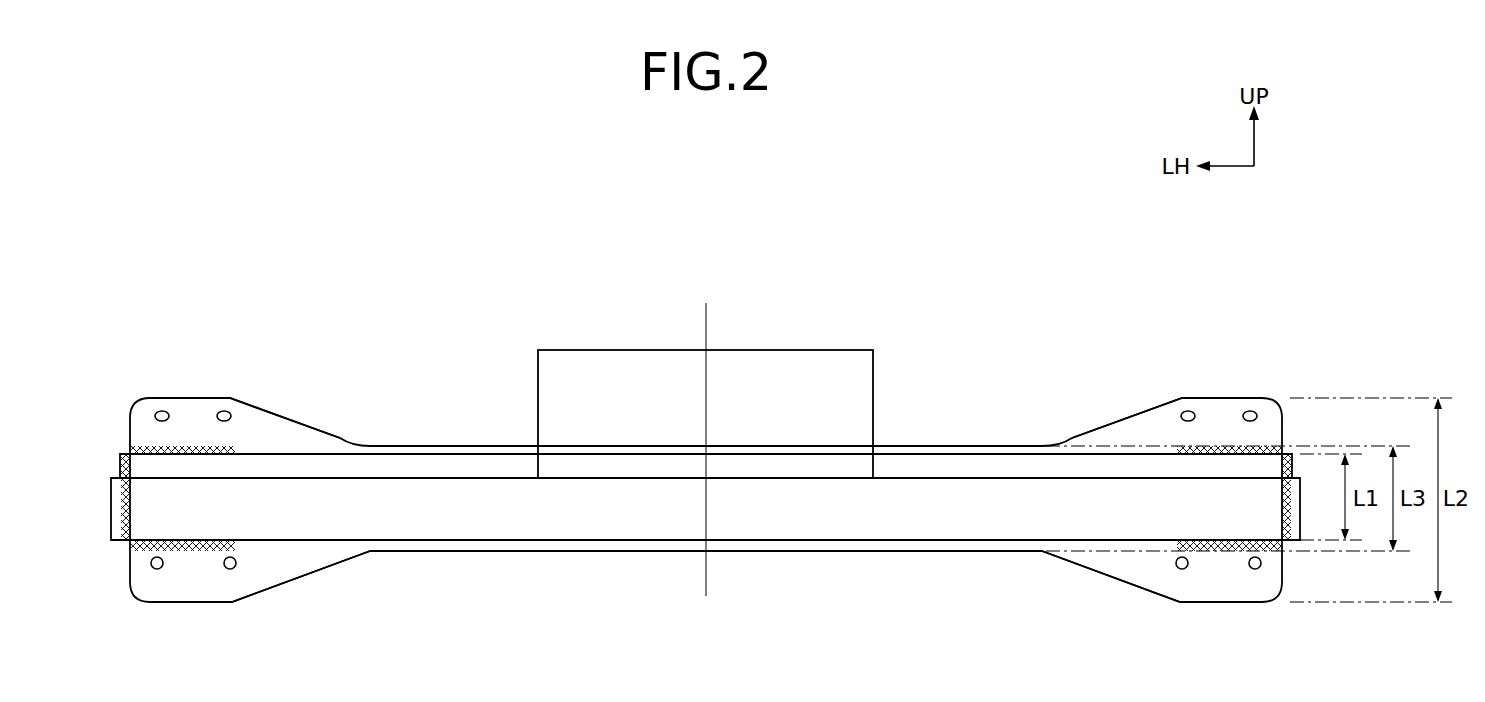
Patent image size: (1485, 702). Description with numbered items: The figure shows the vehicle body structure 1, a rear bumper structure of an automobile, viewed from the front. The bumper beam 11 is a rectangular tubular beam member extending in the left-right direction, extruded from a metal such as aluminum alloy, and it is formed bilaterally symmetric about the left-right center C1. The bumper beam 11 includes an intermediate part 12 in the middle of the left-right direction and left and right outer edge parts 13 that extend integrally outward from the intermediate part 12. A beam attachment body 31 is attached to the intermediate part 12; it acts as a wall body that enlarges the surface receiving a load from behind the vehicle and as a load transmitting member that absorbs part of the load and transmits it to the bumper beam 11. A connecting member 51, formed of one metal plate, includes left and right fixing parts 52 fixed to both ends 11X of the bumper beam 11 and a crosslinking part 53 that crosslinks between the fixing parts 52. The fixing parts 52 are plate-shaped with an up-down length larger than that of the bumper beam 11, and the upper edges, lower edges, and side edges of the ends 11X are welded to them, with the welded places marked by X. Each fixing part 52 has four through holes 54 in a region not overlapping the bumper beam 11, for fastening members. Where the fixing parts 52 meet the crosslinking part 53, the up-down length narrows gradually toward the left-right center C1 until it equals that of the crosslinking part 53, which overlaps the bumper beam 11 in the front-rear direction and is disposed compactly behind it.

The vehicle body structure 1 is at (938, 212).
The bumper beam 11 is at (897, 458).
The intermediate part 12 is at (790, 476).
The both ends 11X is at (143, 467).
The outer edge parts 13 is at (348, 468).
The beam attachment body 31 is at (768, 350).
The connecting member 51 is at (940, 440).
The fixing parts 52 is at (185, 397).
The crosslinking part 53 is at (990, 445).
The through holes 54 is at (160, 410).
The left-right center C1 is at (705, 436).